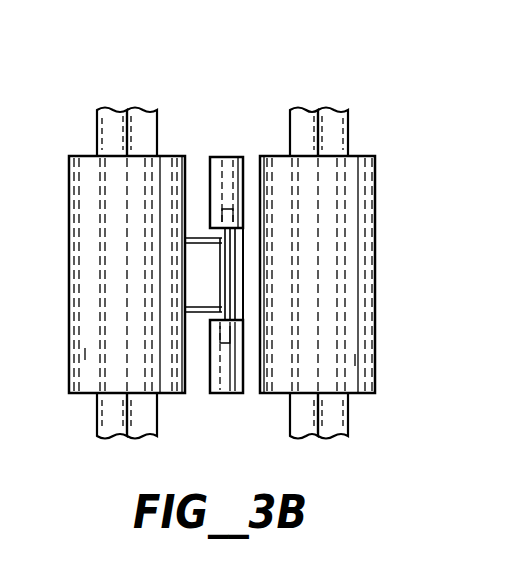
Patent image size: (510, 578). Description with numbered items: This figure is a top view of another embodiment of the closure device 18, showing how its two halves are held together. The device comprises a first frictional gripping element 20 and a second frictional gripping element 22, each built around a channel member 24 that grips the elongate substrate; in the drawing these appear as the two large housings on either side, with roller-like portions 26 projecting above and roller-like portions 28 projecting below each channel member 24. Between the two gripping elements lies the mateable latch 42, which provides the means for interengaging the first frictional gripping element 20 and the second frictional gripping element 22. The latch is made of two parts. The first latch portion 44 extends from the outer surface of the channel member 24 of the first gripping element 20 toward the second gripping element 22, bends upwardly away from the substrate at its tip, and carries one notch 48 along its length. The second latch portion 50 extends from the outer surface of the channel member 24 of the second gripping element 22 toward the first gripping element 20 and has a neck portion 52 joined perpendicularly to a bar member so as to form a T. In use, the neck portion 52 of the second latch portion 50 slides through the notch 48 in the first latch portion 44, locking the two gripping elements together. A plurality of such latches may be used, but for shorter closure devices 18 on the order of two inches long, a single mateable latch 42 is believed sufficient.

The closure device 18 is at (243, 438).
The first frictional gripping element 20 is at (376, 277).
The second frictional gripping element 22 is at (68, 277).
The channel member 24 is at (88, 353).
The upper rollers 26 is at (105, 189).
The lower rollers 28 is at (112, 433).
The mateable latch 42 is at (226, 396).
The first latch portion 44 is at (257, 388).
The notch 48 is at (243, 237).
The second latch portion 50 is at (207, 298).
The neck portion 52 is at (222, 267).